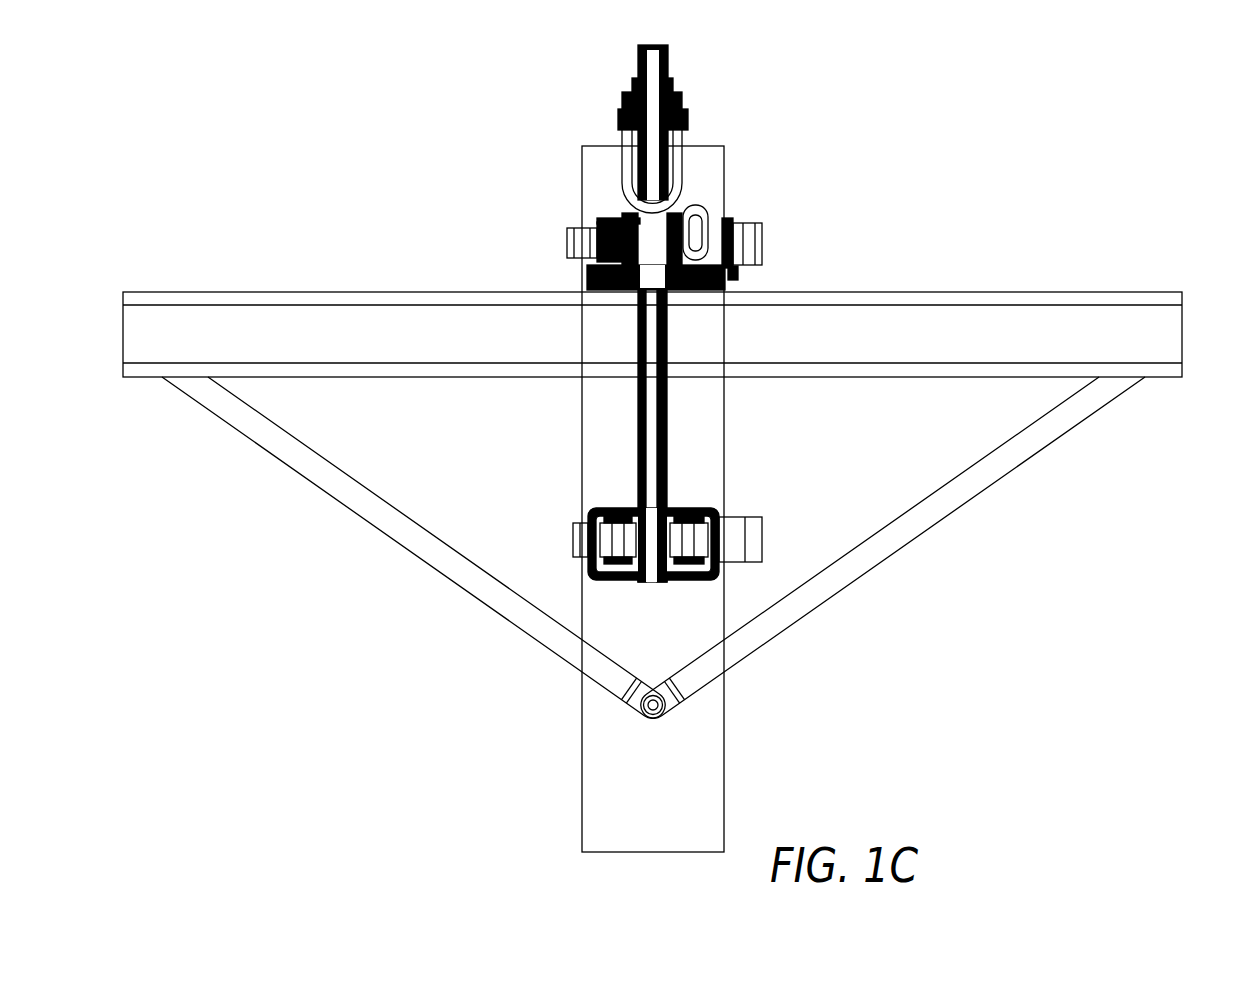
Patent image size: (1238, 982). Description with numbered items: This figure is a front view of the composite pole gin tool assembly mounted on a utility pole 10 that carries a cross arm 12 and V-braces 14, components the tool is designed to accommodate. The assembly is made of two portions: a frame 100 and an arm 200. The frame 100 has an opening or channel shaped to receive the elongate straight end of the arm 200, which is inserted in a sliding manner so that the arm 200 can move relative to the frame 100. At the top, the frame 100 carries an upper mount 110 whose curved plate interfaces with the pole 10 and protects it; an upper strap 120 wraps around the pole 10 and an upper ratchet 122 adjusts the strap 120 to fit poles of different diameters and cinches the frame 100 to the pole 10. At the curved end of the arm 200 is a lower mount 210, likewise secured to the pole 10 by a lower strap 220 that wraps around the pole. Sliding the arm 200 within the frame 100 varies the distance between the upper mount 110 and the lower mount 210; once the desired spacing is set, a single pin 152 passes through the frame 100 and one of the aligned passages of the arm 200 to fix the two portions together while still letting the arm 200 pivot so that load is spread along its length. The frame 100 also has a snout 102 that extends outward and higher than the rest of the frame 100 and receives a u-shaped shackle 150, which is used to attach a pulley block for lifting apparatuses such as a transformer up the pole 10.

The utility pole 10 is at (716, 143).
The cross arm 12 is at (1136, 290).
The V-braces 14 is at (370, 517).
The frame 100 is at (587, 276).
The snout 102 is at (637, 52).
The upper mount 110 is at (722, 218).
The upper strap 120 is at (565, 241).
The upper ratchet 122 is at (748, 240).
The shackle 150 is at (628, 166).
The pin 152 is at (740, 268).
The arm 200 is at (653, 429).
The lower mount 210 is at (710, 563).
The lower strap 220 is at (728, 535).